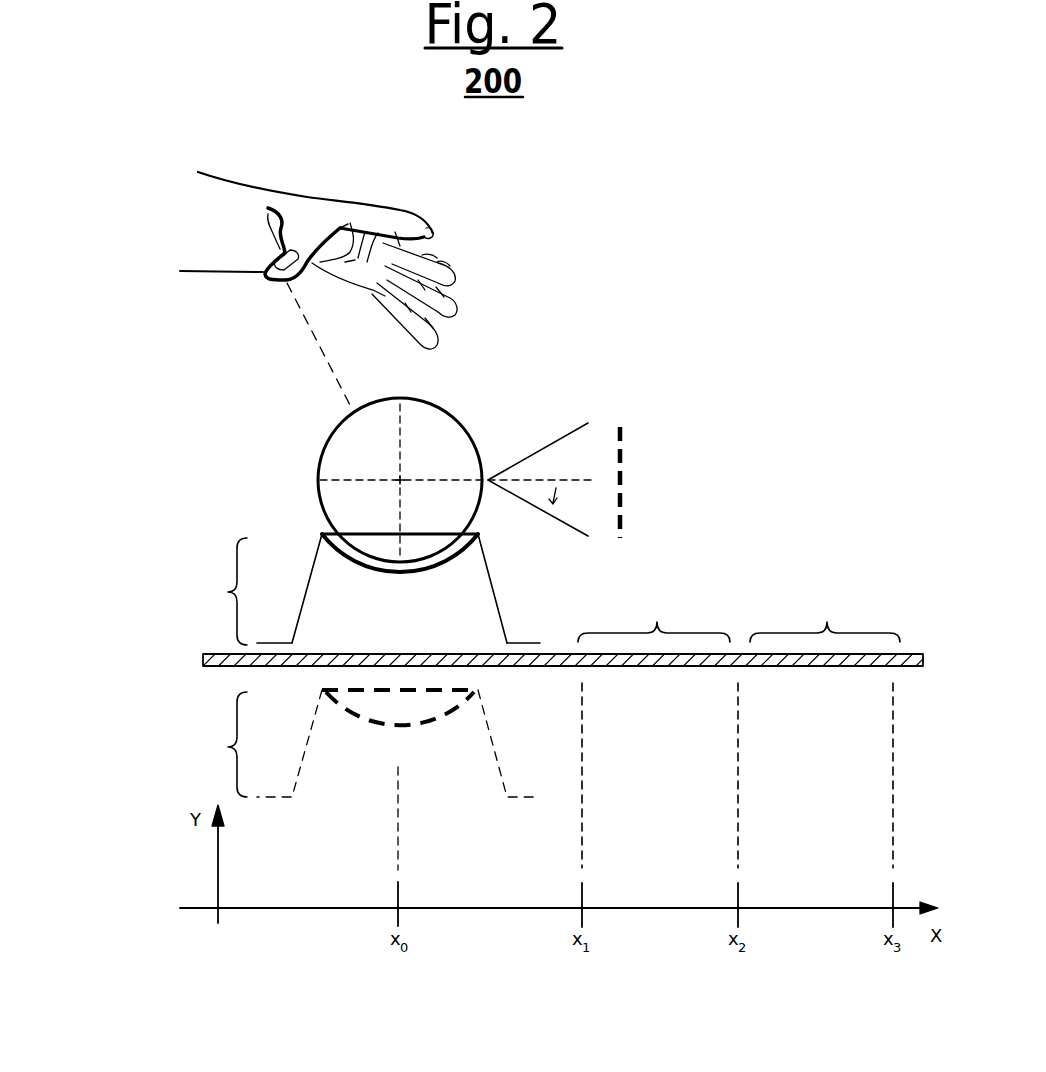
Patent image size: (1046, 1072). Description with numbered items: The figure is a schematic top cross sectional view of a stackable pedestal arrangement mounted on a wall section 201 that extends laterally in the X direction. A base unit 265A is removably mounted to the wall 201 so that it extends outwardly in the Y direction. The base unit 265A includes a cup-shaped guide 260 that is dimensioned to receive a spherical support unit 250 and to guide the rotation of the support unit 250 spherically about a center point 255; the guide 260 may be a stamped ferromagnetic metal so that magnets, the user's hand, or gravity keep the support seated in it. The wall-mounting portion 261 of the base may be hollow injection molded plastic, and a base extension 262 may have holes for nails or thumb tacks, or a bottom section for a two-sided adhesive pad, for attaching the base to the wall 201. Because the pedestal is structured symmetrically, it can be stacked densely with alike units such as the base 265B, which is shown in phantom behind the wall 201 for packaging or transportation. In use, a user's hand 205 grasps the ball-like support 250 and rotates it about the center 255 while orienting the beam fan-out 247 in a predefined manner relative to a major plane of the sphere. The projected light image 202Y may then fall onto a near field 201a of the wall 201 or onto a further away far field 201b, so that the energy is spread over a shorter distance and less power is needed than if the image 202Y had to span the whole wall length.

The user's hand 205 is at (307, 193).
The spherical support unit 250 is at (468, 433).
The center point 255 is at (397, 479).
The beam fan-out 247 is at (556, 438).
The projected light image 202Y is at (624, 420).
The cup-shaped guide 260 is at (377, 574).
The wall-mounting portion 261 is at (313, 605).
The base extension 262 is at (274, 638).
The base unit 265A is at (211, 591).
The stackable base 265B is at (357, 743).
The wall section 201 is at (632, 668).
The near field 201a is at (654, 604).
The far field 201b is at (825, 602).